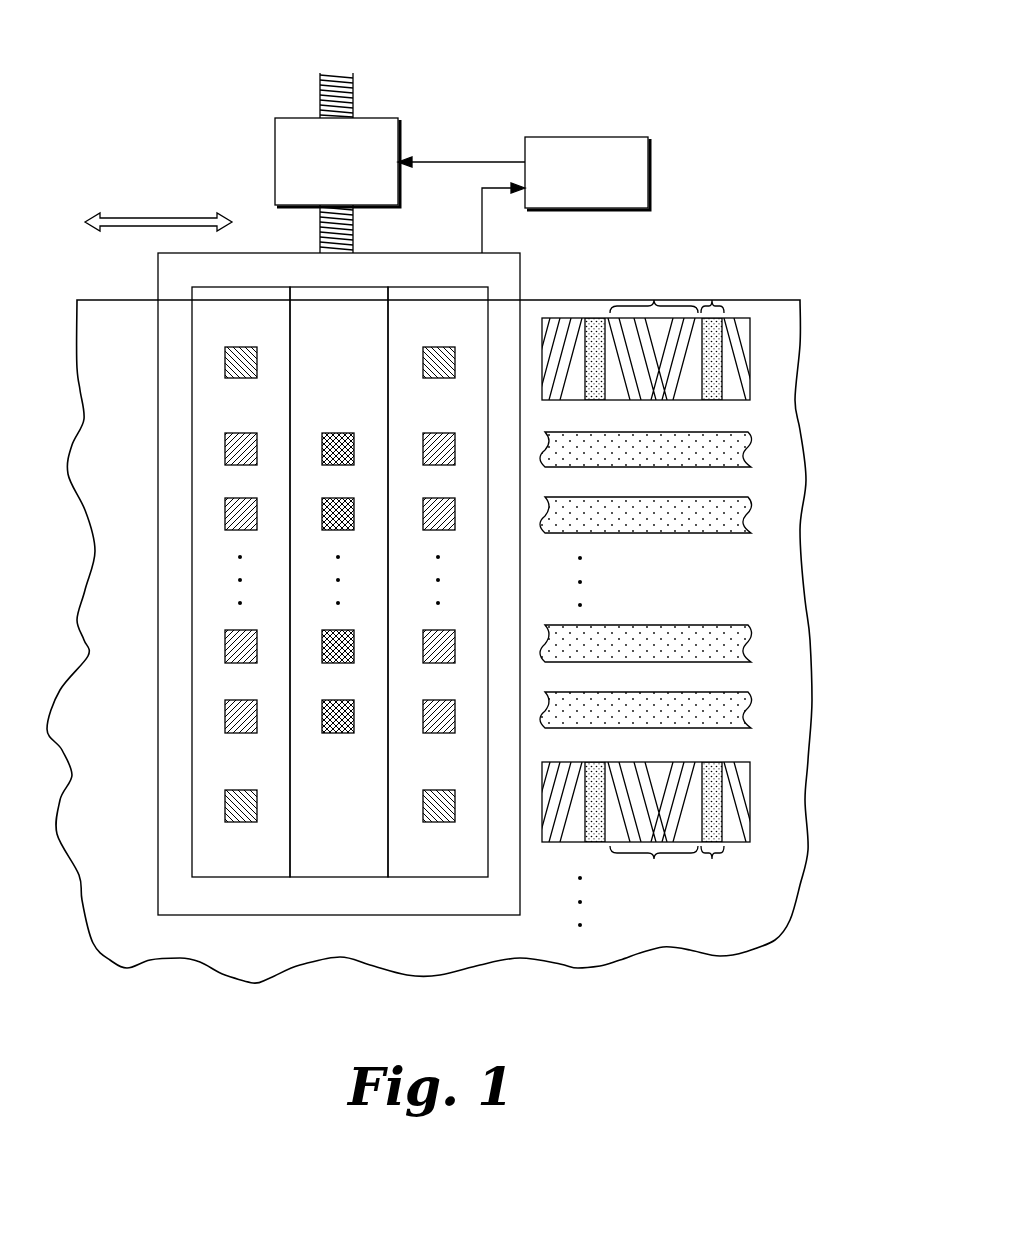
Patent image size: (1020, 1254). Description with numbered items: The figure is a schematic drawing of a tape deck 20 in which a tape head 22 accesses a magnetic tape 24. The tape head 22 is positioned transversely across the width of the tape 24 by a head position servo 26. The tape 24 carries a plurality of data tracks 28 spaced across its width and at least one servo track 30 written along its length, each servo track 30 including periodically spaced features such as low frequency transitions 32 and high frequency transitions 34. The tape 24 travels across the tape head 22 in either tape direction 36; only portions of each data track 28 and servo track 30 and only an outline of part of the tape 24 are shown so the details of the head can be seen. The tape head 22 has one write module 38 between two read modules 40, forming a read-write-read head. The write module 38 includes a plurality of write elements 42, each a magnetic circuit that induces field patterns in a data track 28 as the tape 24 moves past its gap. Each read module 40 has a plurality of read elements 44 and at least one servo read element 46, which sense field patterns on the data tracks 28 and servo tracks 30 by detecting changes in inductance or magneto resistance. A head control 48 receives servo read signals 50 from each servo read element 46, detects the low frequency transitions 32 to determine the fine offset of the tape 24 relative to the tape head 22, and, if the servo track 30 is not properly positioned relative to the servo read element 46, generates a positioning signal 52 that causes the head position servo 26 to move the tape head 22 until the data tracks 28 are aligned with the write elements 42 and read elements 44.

The tape deck 20 is at (655, 70).
The tape head 22 is at (522, 287).
The magnetic tape 24 is at (77, 330).
The head position servo 26 is at (297, 117).
The data tracks 28 is at (655, 467).
The servo track 30 is at (685, 400).
The low frequency transitions 32 is at (654, 582).
The high frequency transitions 34 is at (713, 582).
The tape direction 36 is at (145, 227).
The write module 38 is at (333, 878).
The read modules 40 is at (237, 878).
The write elements 42 is at (340, 465).
The read elements 44 is at (242, 465).
The servo read element 46 is at (242, 378).
The head control 48 is at (573, 137).
The servo read signals 50 is at (482, 227).
The positioning signal 52 is at (464, 159).